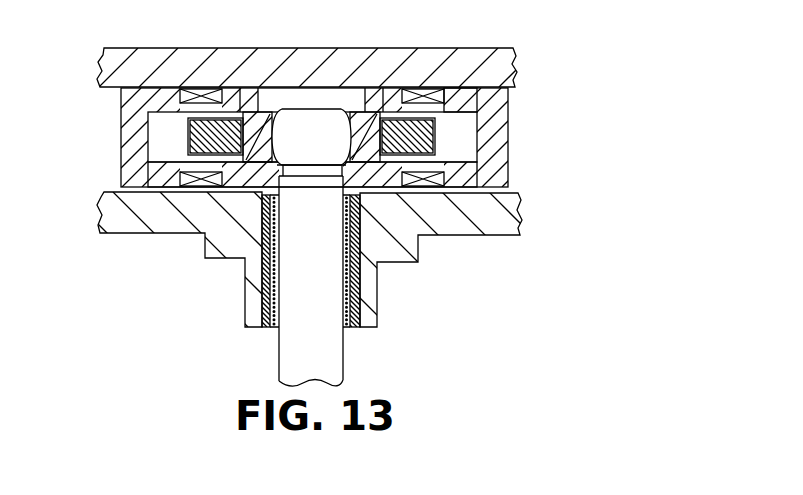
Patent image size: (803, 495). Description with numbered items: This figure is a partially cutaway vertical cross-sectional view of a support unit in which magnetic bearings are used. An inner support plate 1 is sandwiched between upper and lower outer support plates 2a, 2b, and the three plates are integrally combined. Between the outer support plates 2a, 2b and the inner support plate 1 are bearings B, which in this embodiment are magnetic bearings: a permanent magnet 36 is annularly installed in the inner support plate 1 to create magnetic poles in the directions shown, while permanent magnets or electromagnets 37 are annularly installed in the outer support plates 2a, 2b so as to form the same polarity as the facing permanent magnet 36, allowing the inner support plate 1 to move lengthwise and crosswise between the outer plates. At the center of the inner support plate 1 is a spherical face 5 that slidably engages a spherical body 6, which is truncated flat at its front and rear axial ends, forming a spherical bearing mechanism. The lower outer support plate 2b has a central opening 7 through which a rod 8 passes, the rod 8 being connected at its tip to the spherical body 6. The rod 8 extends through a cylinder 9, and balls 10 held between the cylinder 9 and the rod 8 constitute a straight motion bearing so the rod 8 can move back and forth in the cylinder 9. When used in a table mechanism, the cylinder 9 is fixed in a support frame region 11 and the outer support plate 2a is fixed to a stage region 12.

The inner support plate 1 is at (352, 113).
The outer support plate 2a is at (167, 103).
The outer support plate 2b is at (145, 175).
The spherical face 5 is at (257, 117).
The spherical body 6 is at (310, 122).
The opening 7 is at (248, 192).
The rod 8 is at (293, 343).
The cylinder 9 is at (367, 278).
The balls 10 is at (262, 278).
The support frame region 11 is at (115, 213).
The stage region 12 is at (142, 73).
The permanent magnet 36 is at (188, 140).
The permanent magnets or electromagnets 37 is at (445, 97).
The bearings B is at (460, 125).